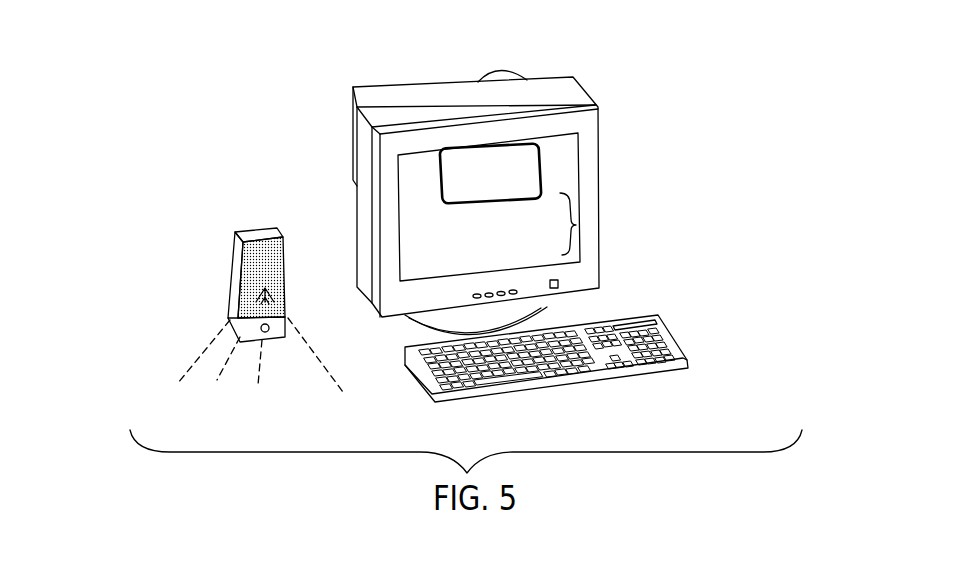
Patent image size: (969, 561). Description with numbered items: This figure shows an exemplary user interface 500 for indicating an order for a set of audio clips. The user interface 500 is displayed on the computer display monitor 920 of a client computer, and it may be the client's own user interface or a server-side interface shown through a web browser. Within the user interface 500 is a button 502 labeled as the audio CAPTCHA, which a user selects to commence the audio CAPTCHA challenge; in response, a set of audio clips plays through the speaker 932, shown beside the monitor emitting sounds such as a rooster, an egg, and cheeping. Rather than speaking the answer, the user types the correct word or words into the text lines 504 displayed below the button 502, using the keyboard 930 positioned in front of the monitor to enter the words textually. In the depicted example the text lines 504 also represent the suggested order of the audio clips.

The user interface 500 is at (415, 170).
The button 502 is at (541, 166).
The text lines 504 is at (577, 225).
The computer display monitor 920 is at (584, 87).
The keyboard 930 is at (676, 340).
The speaker 932 is at (263, 228).